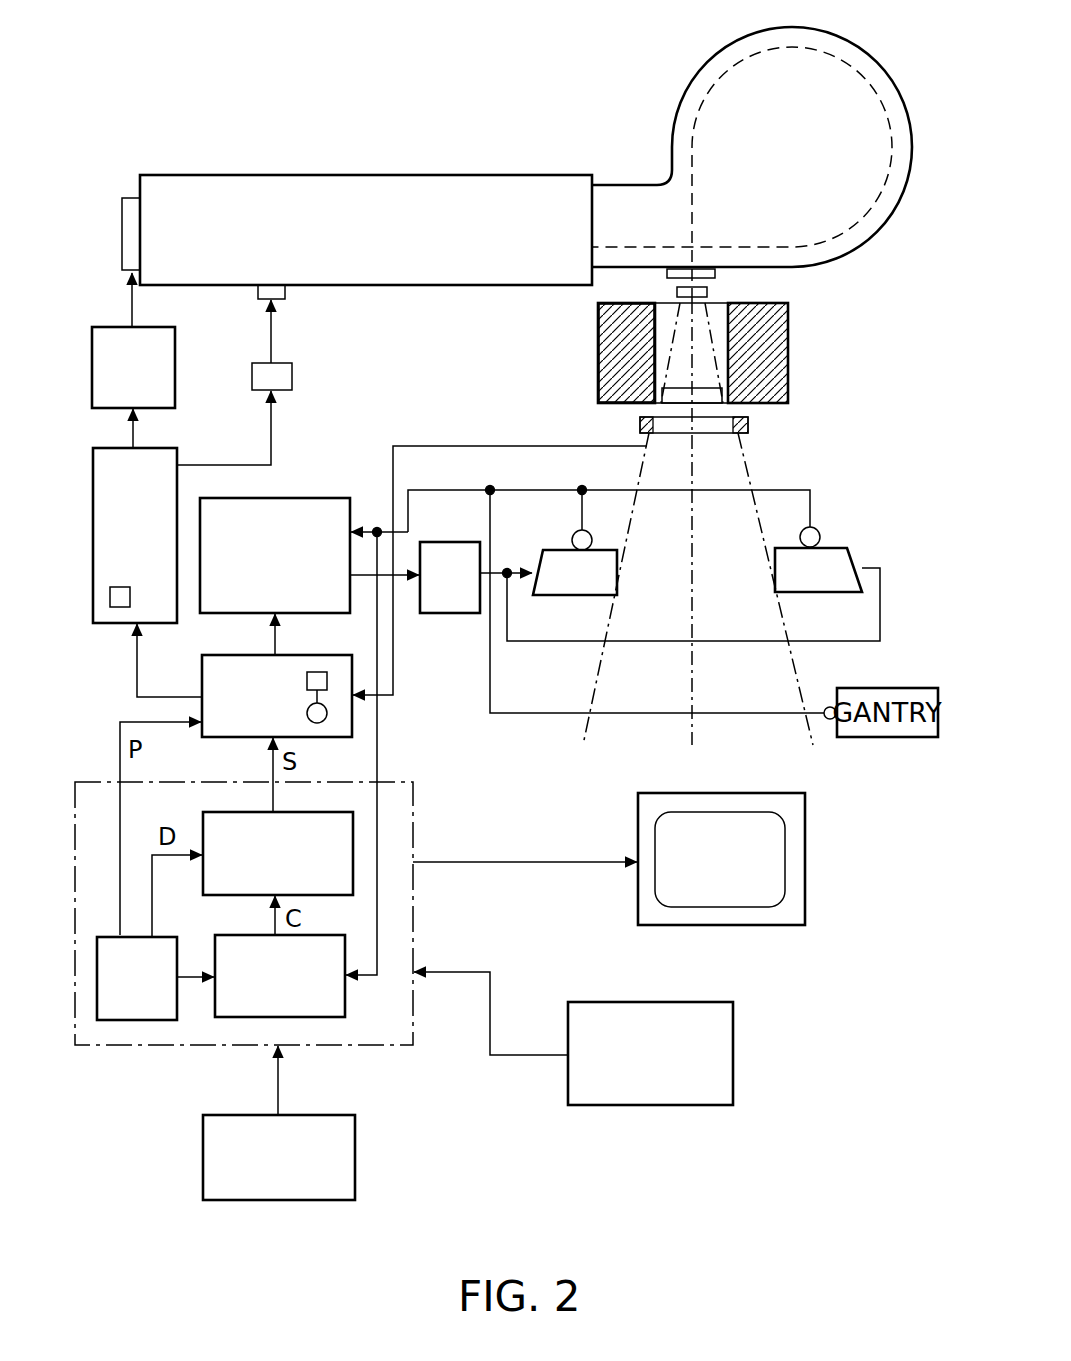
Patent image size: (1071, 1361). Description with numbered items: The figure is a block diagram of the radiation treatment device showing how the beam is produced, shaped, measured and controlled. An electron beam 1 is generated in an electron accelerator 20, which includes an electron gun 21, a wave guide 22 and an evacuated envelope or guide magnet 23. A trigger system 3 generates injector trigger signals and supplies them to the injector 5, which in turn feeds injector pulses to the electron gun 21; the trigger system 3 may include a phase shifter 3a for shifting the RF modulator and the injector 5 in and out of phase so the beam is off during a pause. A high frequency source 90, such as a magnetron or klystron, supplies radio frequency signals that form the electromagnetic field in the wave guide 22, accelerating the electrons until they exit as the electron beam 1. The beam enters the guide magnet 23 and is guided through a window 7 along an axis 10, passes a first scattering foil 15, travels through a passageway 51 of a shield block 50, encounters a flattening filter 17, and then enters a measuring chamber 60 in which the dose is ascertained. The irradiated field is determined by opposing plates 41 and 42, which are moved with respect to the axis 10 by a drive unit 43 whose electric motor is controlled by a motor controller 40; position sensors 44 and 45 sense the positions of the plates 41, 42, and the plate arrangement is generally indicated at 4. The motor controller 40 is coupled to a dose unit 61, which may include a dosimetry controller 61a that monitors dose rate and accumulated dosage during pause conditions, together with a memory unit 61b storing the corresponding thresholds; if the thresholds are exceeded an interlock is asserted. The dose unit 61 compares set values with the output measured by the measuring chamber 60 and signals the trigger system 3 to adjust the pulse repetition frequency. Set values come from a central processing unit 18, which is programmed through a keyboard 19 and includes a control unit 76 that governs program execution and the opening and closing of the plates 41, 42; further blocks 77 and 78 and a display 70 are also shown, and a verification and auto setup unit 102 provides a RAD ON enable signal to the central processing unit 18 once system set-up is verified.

The electron beam 1 is at (857, 72).
The electron accelerator 20 is at (578, 98).
The electron gun 21 is at (120, 222).
The wave guide 22 is at (348, 248).
The guide magnet 23 is at (851, 252).
The window 7 is at (668, 274).
The first scattering foil 15 is at (710, 293).
The passageway 51 is at (658, 333).
The shield block 50 is at (612, 380).
The flattening filter 17 is at (680, 397).
The measuring chamber 60 is at (750, 424).
The axis 10 is at (697, 588).
The injector 5 is at (123, 379).
The high frequency source 90 is at (293, 377).
The trigger system 3 is at (125, 517).
The phase shifter 3a is at (131, 597).
The motor controller 40 is at (253, 569).
The dose unit 61 is at (253, 712).
The dosimetry controller 61a is at (310, 670).
The memory unit 61b is at (316, 724).
The drive unit 43 is at (431, 591).
The plate 41 is at (559, 589).
The plate 42 is at (796, 587).
The position sensor 44 is at (572, 538).
The position sensor 45 is at (822, 535).
The collimator jaw arrangement 4 is at (770, 523).
The central processing unit 18 is at (413, 805).
The dose calculation unit 78 is at (258, 871).
The control unit 76 is at (118, 993).
The computing unit 77 is at (261, 993).
The display 70 is at (701, 874).
The verification and auto setup unit 102 is at (733, 1042).
The keyboard 19 is at (259, 1174).